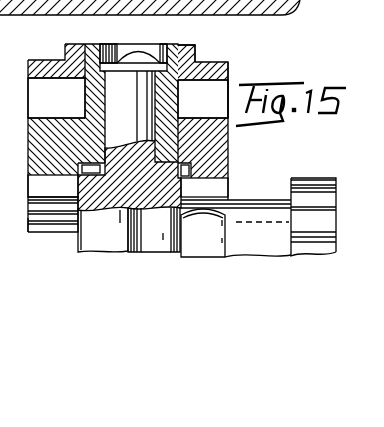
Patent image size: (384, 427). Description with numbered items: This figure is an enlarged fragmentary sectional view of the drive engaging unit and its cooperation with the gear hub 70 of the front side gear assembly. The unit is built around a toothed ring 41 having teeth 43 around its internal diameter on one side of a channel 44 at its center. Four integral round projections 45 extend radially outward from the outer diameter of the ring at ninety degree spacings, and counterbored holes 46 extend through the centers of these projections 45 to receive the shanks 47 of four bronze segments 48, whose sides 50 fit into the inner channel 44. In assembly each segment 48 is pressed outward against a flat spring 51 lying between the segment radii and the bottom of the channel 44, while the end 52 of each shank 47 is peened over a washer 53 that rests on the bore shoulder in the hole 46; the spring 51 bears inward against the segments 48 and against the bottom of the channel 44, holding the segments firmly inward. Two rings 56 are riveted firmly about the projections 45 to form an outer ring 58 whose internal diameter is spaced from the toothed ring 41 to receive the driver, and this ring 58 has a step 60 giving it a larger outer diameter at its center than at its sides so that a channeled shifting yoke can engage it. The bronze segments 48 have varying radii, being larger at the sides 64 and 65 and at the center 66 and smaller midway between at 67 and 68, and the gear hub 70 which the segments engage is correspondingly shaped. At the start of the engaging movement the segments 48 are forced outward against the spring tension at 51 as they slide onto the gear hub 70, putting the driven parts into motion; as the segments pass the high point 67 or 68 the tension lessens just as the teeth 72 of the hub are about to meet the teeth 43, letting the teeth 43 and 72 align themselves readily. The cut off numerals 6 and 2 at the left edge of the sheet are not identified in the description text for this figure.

The housing (cut off numeral) 6 is at (28, 72).
The seal element (cut off numeral) 2 is at (28, 219).
The toothed ring 41 is at (223, 152).
The teeth 43 is at (228, 197).
The channel 44 is at (82, 178).
The round projections 45 is at (83, 97).
The counterbored holes 46 is at (163, 44).
The shank 47 is at (136, 131).
The bronze segments 48 is at (80, 240).
The sides 50 is at (173, 188).
The flat springs 51 is at (170, 176).
The end 52 is at (158, 47).
The washer 53 is at (120, 45).
The rings 56 is at (229, 74).
The ring 58 is at (62, 36).
The step 60 is at (65, 48).
The side 64 is at (80, 252).
The side 65 is at (178, 259).
The center 66 is at (130, 257).
The high point 67 is at (100, 252).
The high point 68 is at (160, 255).
The gear hub 70 is at (226, 256).
The teeth 72 is at (309, 178).